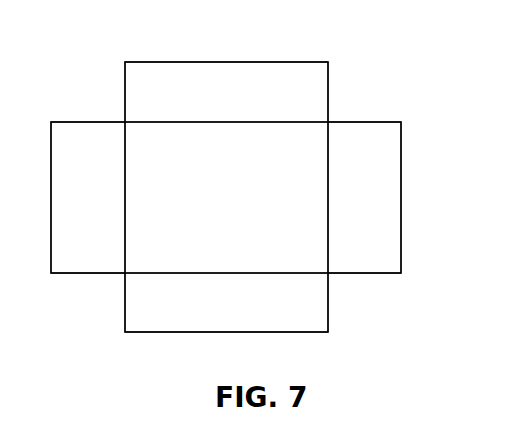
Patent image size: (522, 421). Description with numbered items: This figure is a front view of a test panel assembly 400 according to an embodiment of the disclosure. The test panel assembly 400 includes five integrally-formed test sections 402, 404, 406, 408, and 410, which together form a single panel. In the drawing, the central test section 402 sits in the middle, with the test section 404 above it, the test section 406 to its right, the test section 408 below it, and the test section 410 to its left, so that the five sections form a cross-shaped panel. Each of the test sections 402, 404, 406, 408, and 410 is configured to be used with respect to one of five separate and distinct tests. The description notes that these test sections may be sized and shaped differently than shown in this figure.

The test panel assembly 400 is at (103, 50).
The test section 402 is at (292, 145).
The test section 404 is at (277, 67).
The test section 406 is at (401, 177).
The test section 408 is at (185, 315).
The test section 410 is at (51, 260).